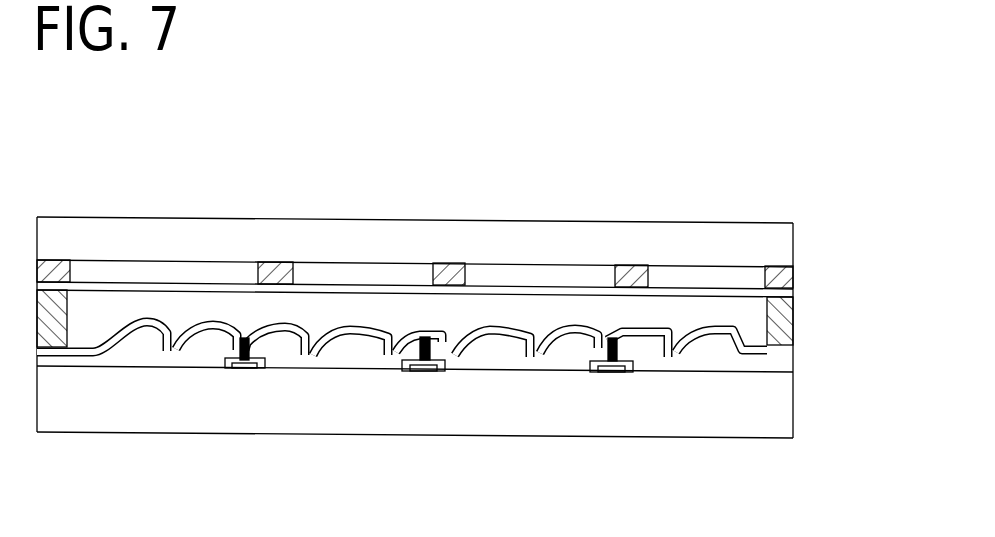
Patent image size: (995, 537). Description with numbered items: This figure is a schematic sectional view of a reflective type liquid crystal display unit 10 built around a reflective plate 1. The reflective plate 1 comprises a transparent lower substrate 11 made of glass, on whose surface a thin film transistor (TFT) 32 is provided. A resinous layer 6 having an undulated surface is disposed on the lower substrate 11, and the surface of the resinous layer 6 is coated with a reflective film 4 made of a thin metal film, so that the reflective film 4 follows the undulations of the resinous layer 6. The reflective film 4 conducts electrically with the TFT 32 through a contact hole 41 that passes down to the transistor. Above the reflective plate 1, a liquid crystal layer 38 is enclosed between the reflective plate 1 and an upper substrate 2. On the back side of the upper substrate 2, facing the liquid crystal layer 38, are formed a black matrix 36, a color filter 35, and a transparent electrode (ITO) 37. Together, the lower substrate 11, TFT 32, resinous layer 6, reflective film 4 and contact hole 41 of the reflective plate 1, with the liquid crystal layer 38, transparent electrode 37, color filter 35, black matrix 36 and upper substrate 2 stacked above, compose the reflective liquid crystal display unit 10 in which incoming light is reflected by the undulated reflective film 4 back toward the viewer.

The reflective liquid crystal display unit 10 is at (846, 171).
The upper substrate 2 is at (362, 234).
The color filter 35 is at (170, 272).
The black matrix 36 is at (281, 266).
The transparent electrode (ITO) 37 is at (92, 288).
The liquid crystal layer 38 is at (747, 314).
The reflective film 4 is at (788, 346).
The resinous layer 6 is at (117, 347).
The contact hole 41 is at (598, 345).
The thin film transistor (TFT) 32 is at (612, 370).
The lower substrate 11 is at (762, 420).
The reflective plate 1 is at (845, 342).